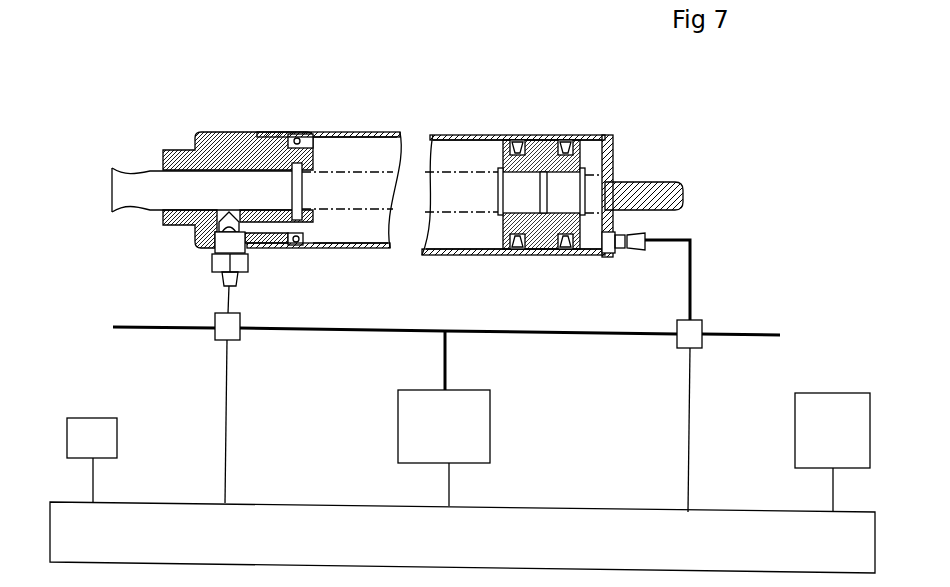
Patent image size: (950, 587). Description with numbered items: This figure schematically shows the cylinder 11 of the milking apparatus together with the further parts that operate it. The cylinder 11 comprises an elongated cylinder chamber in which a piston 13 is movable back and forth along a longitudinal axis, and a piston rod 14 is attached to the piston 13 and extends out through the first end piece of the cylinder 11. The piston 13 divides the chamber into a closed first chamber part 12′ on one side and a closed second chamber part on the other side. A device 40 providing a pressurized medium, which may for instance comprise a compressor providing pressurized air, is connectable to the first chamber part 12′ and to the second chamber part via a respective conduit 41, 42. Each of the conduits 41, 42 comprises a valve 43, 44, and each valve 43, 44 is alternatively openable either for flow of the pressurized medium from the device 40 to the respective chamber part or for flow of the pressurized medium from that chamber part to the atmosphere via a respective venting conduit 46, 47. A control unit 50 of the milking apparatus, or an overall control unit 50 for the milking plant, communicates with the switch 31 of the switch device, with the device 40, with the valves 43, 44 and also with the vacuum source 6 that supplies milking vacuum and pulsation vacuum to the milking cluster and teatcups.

The vacuum source 6 is at (805, 420).
The cylinder 11 is at (280, 132).
The first chamber part 12′ is at (347, 147).
The piston 13 is at (543, 142).
The piston rod 14 is at (140, 187).
The switch 31 is at (97, 430).
The device providing a pressurized medium 40 is at (422, 413).
The conduit 41 is at (280, 327).
The conduit 42 is at (603, 331).
The valve 43 is at (231, 337).
The valve 44 is at (679, 341).
The venting conduit 46 is at (160, 327).
The venting conduit 47 is at (762, 334).
The control unit 50 is at (182, 528).